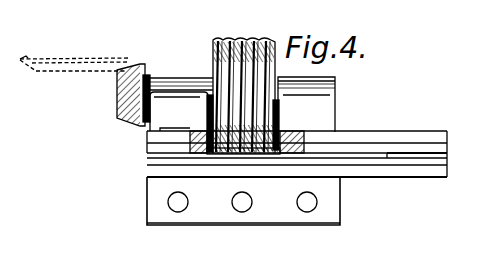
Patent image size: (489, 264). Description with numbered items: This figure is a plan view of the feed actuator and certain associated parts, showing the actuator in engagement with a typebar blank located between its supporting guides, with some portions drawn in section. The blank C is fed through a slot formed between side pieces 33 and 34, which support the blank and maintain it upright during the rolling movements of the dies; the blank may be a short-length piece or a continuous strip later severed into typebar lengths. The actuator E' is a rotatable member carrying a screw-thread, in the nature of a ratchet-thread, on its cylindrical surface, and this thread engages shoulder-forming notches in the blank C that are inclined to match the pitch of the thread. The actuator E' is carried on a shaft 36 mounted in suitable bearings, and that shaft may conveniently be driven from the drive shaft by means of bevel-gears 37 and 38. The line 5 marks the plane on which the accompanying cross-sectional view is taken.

The section line 5— 5 is at (243, 38).
The side piece 33 is at (423, 167).
The side piece 34 is at (415, 151).
The shaft 36 is at (336, 94).
The bevel-gear 37 is at (128, 107).
The bevel-gear 38 is at (83, 71).
The blank C is at (362, 156).
The actuator E' is at (179, 89).